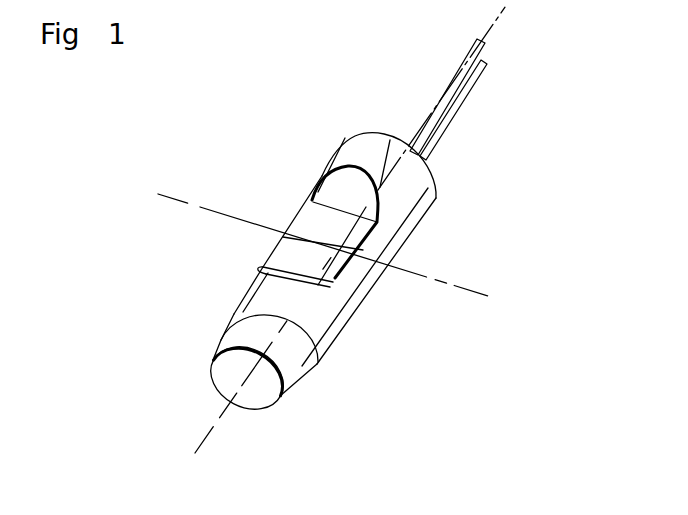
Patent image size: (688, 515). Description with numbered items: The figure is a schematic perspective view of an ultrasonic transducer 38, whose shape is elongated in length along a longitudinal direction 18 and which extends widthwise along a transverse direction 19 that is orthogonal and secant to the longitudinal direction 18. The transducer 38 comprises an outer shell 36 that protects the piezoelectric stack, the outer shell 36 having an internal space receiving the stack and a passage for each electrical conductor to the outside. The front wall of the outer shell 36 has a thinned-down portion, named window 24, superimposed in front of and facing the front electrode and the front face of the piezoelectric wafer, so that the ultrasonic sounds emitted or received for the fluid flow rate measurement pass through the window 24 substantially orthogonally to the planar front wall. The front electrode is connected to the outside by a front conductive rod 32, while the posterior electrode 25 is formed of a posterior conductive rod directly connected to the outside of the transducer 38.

The longitudinal direction 18 is at (490, 30).
The transverse direction 19 is at (186, 201).
The window 24 is at (333, 274).
The posterior electrode 25 is at (467, 97).
The front conductive rod 32 is at (446, 100).
The outer shell 36 is at (261, 287).
The ultrasonic transducer 38 is at (305, 152).